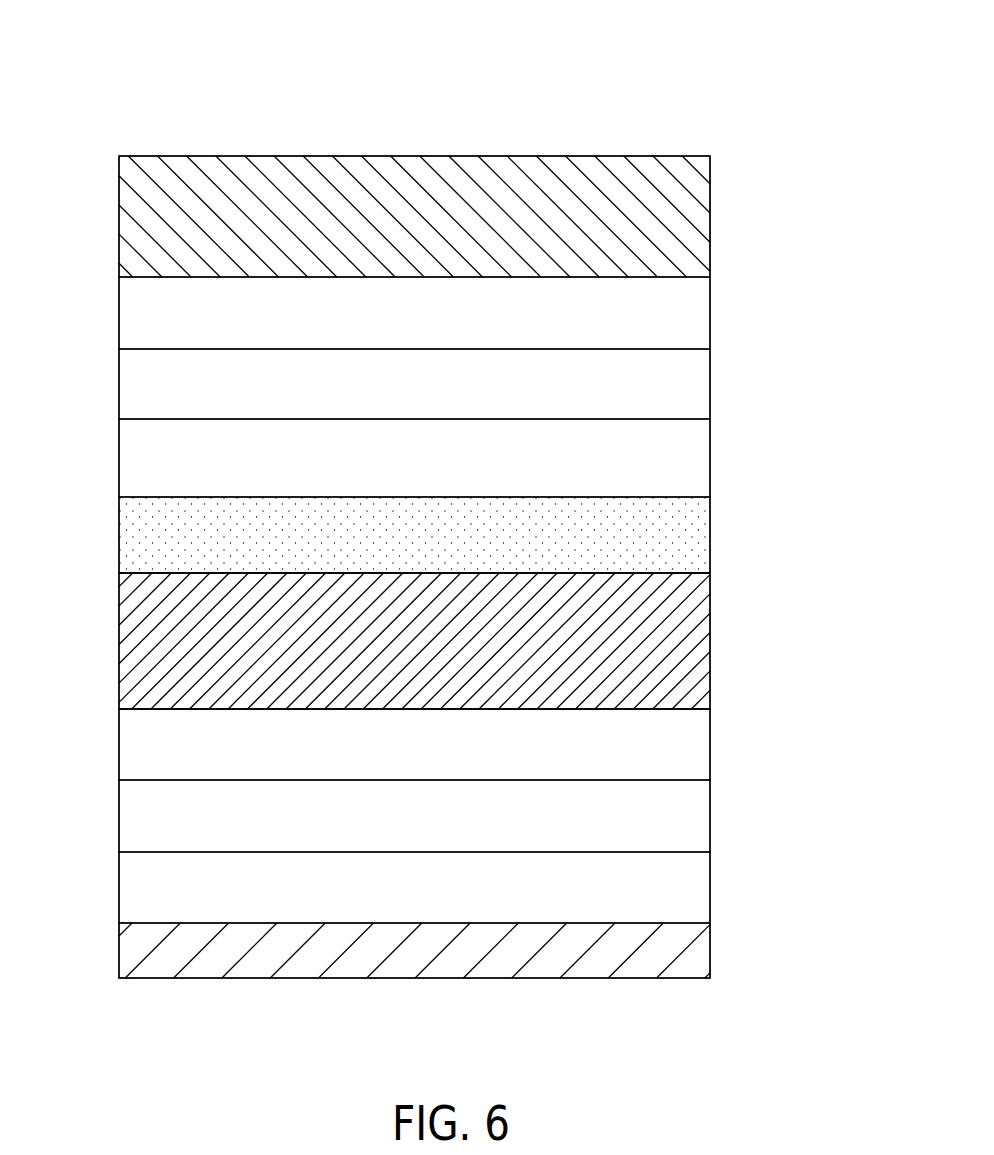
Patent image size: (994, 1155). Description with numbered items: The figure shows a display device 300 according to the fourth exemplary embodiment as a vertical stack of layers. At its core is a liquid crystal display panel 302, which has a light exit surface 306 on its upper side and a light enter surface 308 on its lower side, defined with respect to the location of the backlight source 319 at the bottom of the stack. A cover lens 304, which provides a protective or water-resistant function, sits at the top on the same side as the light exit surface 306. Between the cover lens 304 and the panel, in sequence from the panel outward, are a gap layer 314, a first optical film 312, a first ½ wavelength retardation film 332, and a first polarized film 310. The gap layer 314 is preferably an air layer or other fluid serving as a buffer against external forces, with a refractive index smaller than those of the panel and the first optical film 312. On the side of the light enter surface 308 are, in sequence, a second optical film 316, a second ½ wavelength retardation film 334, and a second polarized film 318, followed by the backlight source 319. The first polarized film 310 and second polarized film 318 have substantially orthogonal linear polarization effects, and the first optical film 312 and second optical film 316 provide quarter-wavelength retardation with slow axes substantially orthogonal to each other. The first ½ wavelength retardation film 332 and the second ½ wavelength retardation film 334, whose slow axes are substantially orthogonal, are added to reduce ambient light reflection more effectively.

The display device 300 is at (731, 86).
The liquid crystal display panel 302 is at (704, 642).
The cover lens 304 is at (705, 219).
The light exit surface 306 is at (147, 572).
The light enter surface 308 is at (147, 711).
The first polarized film 310 is at (705, 334).
The first optical film 312 is at (705, 466).
The gap layer 314 is at (693, 535).
The second optical film 316 is at (705, 746).
The second polarized film 318 is at (705, 889).
The backlight source 319 is at (705, 951).
The first ½ wavelength retardation film 332 is at (705, 407).
The second ½ wavelength retardation film 334 is at (705, 823).